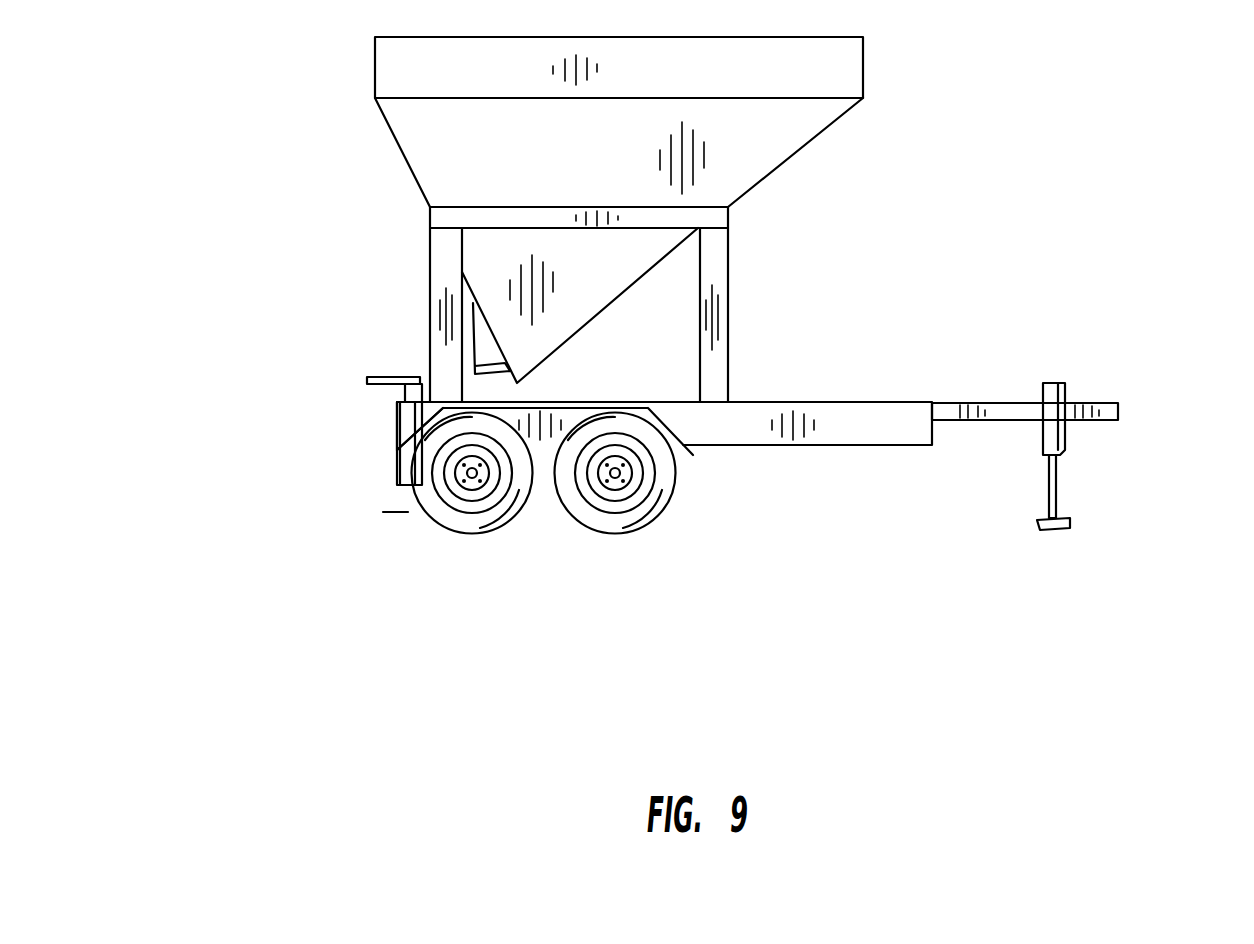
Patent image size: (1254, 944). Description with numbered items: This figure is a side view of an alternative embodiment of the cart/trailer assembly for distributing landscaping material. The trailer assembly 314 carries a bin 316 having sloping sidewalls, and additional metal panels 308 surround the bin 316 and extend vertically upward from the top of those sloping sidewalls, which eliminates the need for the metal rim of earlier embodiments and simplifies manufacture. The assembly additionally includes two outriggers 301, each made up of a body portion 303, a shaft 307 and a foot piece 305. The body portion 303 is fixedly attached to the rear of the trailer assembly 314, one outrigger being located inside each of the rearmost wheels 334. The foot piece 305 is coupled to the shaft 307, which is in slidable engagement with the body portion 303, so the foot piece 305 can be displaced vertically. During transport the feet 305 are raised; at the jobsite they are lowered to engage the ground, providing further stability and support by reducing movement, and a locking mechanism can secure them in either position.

The outrigger 301 is at (380, 432).
The body portion 303 is at (398, 450).
The foot piece 305 is at (397, 485).
The shaft 307 is at (397, 493).
The metal panels 308 is at (397, 64).
The trailer assembly 314 is at (1165, 388).
The bin 316 is at (483, 142).
The rearmost wheels 334 is at (465, 507).